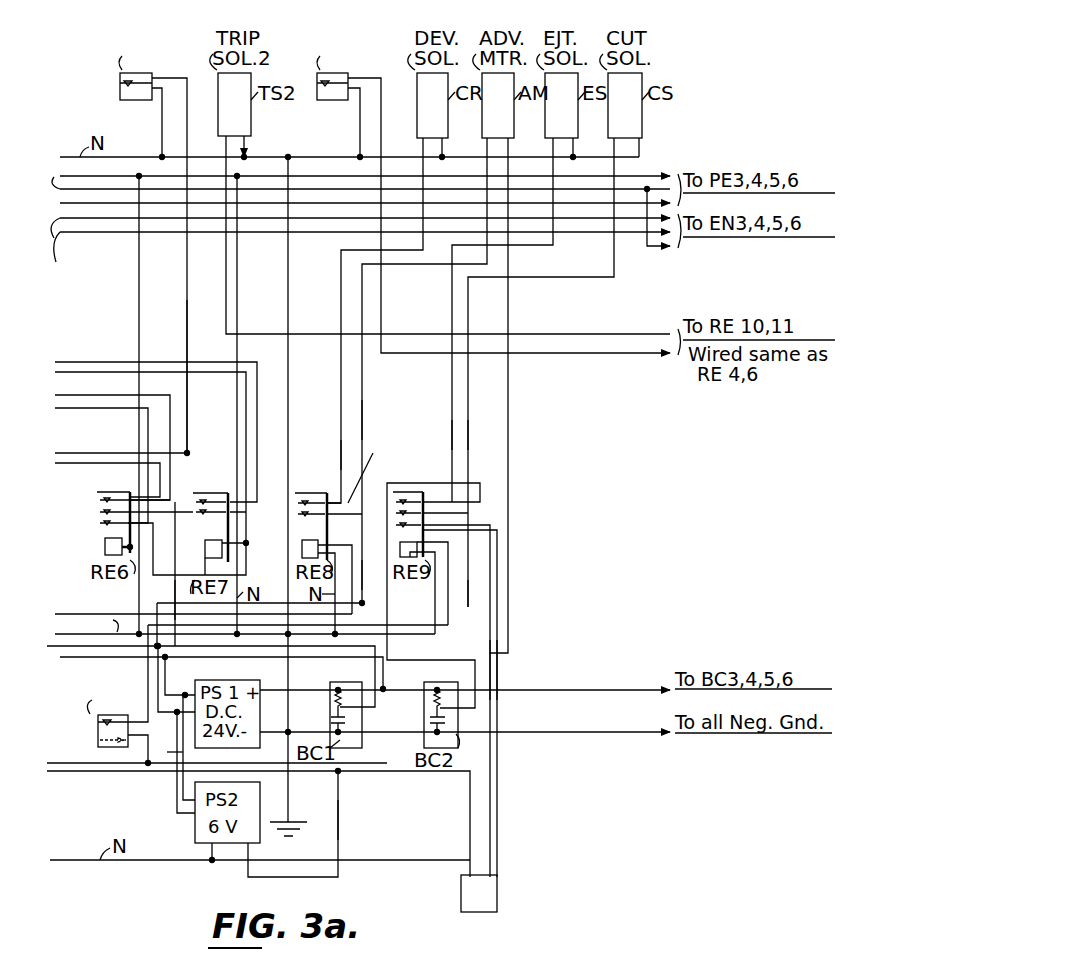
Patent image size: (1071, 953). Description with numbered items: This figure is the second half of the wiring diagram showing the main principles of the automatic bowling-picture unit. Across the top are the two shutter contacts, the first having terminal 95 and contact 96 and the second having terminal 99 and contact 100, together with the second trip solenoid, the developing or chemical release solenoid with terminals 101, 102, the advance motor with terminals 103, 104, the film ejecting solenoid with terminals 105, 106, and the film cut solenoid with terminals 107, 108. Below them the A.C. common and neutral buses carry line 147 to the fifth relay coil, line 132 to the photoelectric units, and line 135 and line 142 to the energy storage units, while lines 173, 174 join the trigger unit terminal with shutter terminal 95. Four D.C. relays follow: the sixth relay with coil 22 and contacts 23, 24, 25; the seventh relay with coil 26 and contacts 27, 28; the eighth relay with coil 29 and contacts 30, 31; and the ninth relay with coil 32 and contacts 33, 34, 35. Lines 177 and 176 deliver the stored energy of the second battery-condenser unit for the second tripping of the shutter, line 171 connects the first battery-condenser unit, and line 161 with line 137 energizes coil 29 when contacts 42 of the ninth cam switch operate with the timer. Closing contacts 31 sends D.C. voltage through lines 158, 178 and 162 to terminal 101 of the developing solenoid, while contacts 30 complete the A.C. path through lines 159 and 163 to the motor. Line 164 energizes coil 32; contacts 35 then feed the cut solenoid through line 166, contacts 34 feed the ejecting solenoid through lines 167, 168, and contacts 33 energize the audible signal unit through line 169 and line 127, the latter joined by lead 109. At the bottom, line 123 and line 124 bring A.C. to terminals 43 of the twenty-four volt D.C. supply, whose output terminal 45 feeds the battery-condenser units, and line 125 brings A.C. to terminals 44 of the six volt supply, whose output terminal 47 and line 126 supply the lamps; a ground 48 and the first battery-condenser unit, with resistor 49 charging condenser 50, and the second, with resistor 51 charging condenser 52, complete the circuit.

The relay coil 22 is at (105, 546).
The contacts 23 is at (100, 523).
The contacts 24 is at (100, 511).
The contacts 25 is at (102, 500).
The relay coil 26 is at (215, 558).
The contacts 27 is at (190, 510).
The contacts 28 is at (211, 500).
The relay coil 29 is at (302, 546).
The contacts 30 is at (298, 514).
The contacts 31 is at (295, 496).
The relay coil 32 is at (400, 549).
The contacts 33 is at (396, 525).
The contacts 34 is at (396, 510).
The contacts 35 is at (409, 498).
The contacts 42 is at (98, 722).
The terminals 43 is at (186, 692).
The terminals 44 is at (190, 808).
The power supply PS1 positive output 45 is at (266, 690).
The power supply PS2 output 47 is at (232, 862).
The ground connection 48 is at (290, 820).
The resistor 49 is at (336, 698).
The condenser 50 is at (331, 720).
The resistor 51 is at (434, 698).
The condenser 52 is at (430, 720).
The terminal 95 is at (152, 78).
The lamp X1 96 is at (154, 94).
The lead from lamp X2 99 is at (351, 78).
The lamp X2 100 is at (350, 94).
The terminal 101 is at (422, 132).
The lead of develop solenoid CR 102 is at (440, 150).
The terminal 103 is at (487, 150).
The terminal 104 is at (508, 150).
The terminal 105 is at (554, 136).
The terminal 106 is at (573, 150).
The terminal 107 is at (616, 132).
The terminal 108 is at (639, 150).
The lead to signal lamp SIG1 109 is at (480, 877).
The line 123 is at (50, 648).
The line 124 is at (171, 694).
The line 125 is at (183, 786).
The line 126 is at (340, 822).
The line 127 is at (48, 772).
The line 132 is at (90, 203).
The line 135 is at (47, 244).
The line 137 is at (94, 752).
The conductor 142 is at (62, 237).
The line 147 is at (88, 176).
The line 158 is at (383, 471).
The line 159 is at (364, 606).
The line 161 is at (112, 612).
The line 162 is at (341, 446).
The line 163 is at (372, 412).
The line 164 is at (448, 627).
The line 166 is at (468, 434).
The line 167 is at (452, 436).
The line 168 is at (468, 610).
The line 169 is at (490, 670).
The line 171 is at (97, 659).
The line 173 is at (63, 462).
The line 174 is at (187, 288).
The line 176 is at (175, 596).
The line 177 is at (55, 467).
The line 178 is at (388, 596).